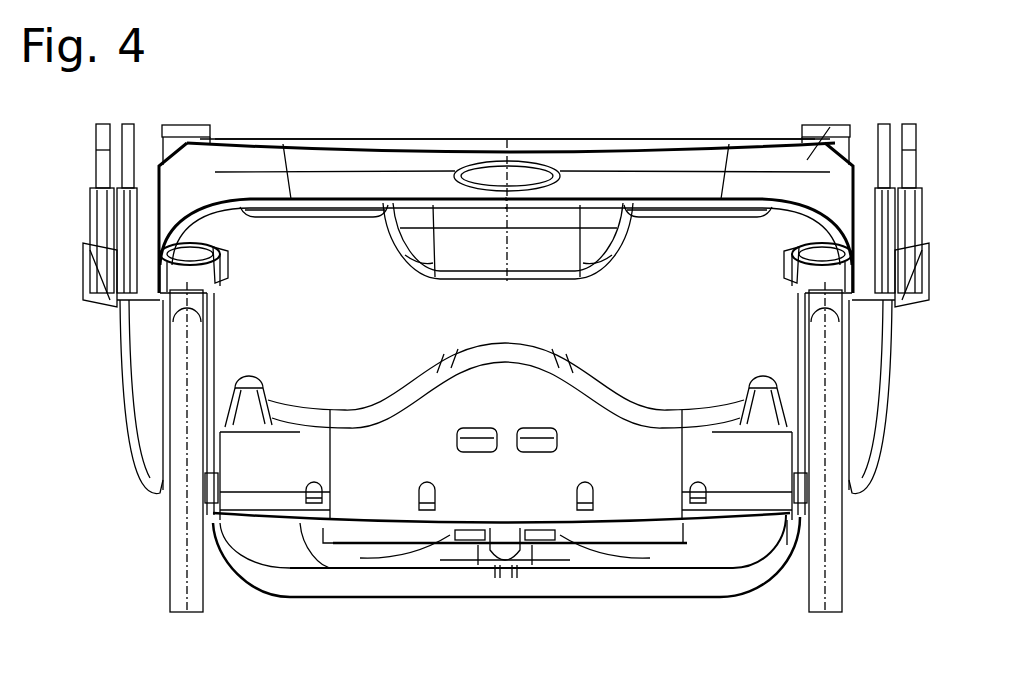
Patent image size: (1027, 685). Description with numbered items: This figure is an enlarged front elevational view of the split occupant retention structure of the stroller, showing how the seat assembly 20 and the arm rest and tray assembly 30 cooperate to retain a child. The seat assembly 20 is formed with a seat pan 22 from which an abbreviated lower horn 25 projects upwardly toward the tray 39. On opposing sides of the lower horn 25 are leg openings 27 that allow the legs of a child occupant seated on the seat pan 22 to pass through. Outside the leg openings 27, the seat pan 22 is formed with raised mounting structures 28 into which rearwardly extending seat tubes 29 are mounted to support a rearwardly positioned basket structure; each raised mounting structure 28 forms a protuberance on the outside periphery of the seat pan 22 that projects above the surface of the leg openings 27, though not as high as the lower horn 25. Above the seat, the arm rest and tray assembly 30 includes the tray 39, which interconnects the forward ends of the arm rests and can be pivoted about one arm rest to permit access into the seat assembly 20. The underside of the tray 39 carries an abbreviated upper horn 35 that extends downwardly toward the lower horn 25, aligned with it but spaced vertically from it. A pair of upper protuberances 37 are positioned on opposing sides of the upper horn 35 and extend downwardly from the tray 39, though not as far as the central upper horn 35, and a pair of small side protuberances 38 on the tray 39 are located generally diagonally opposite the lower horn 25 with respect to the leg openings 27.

The seat assembly 20 is at (368, 510).
The seat pan 22 is at (738, 464).
The abbreviated lower horn 25 is at (508, 368).
The leg openings 27 is at (270, 250).
The raised mounting structures 28 is at (274, 376).
The seat tubes 29 is at (243, 378).
The arm rest and tray assembly 30 is at (437, 103).
The abbreviated upper horn 35 is at (375, 296).
The upper protuberances 37 is at (326, 211).
The side protuberances 38 is at (232, 254).
The tray 39 is at (556, 138).